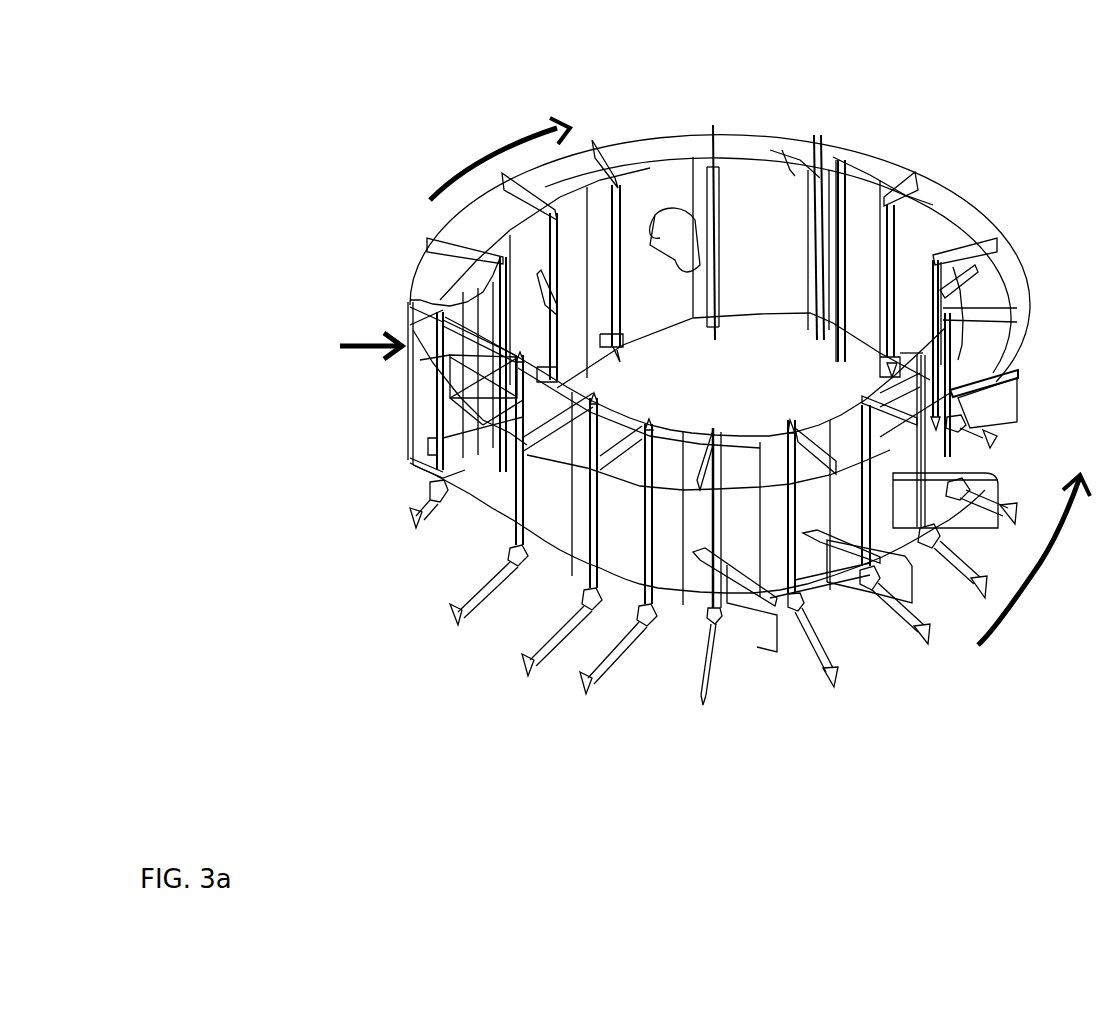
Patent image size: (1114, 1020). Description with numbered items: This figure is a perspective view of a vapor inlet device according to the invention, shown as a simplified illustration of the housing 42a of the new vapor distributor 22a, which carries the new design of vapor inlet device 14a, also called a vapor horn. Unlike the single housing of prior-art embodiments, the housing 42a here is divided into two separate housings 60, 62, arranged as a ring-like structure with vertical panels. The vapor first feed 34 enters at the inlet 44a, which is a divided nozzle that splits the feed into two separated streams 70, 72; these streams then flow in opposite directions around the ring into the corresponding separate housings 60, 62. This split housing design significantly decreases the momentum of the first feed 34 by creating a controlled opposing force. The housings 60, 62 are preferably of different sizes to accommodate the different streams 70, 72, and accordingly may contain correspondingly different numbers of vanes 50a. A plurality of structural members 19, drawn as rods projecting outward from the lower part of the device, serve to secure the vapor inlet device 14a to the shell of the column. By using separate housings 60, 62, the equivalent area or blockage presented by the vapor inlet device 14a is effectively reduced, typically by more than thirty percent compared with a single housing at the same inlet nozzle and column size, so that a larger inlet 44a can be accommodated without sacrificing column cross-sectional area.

The vapor distributor 22a is at (346, 193).
The vapor inlet device 14a is at (885, 172).
The inlet 44a is at (393, 377).
The first feed 34 is at (348, 350).
The housing 62 is at (627, 136).
The housing 42a is at (757, 220).
The structural members 19 is at (526, 668).
The housing 60 is at (534, 553).
The vanes 50a is at (875, 590).
The stream 72 is at (503, 150).
The stream 70 is at (1027, 600).